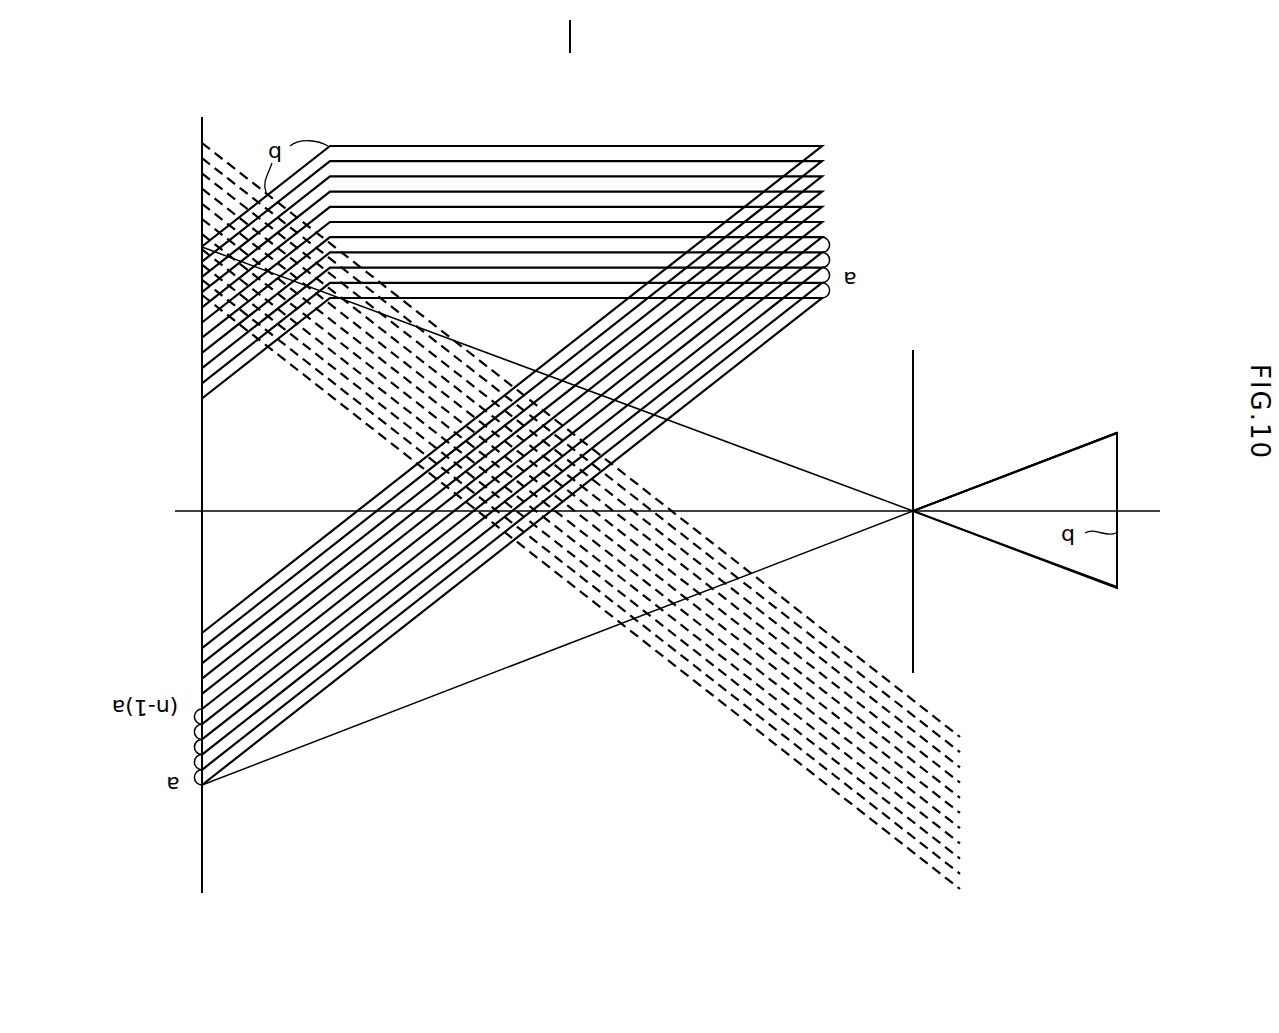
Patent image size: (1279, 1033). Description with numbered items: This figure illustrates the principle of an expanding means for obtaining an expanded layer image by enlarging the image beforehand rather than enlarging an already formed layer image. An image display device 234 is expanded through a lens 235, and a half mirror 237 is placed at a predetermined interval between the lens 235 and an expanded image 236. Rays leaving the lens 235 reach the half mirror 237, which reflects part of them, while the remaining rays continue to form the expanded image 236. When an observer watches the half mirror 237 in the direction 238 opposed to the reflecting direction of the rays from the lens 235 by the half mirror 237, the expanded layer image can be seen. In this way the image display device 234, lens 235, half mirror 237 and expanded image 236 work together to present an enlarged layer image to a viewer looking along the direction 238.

The image display device 234 is at (1119, 456).
The lens 235 is at (1062, 452).
The expanded image 236 is at (202, 472).
The half mirror 237 is at (338, 400).
The viewing direction 238 is at (577, 120).